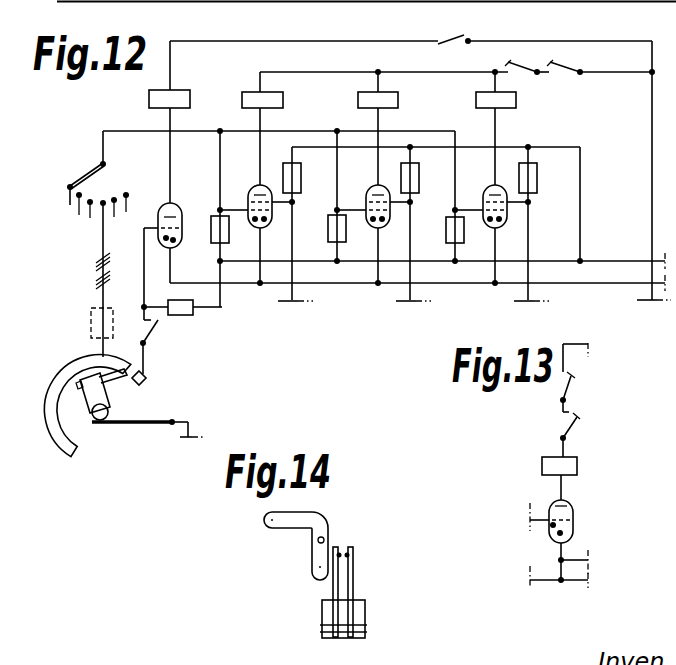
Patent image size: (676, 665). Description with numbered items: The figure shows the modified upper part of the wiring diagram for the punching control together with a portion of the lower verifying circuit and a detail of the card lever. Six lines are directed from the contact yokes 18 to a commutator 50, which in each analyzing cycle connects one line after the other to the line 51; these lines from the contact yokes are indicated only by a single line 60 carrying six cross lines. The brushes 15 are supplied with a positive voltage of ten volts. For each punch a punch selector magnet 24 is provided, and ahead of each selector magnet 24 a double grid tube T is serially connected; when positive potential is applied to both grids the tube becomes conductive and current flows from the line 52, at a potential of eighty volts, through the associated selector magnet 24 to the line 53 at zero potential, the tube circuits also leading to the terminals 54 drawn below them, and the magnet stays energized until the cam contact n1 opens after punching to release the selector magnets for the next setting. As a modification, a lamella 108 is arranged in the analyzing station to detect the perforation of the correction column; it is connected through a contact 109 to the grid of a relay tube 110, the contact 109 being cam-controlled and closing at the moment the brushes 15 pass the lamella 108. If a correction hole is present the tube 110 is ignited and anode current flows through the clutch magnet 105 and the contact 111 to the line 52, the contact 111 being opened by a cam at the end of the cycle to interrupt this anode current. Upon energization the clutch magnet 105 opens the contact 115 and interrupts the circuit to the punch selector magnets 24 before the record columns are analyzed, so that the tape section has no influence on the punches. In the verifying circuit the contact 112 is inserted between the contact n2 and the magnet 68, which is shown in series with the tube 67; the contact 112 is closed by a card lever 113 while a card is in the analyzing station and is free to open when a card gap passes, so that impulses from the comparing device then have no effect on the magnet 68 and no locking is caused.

In FIG. 12, the contact 111 is at (450, 38).
In FIG. 12, the contact 115 is at (527, 59).
In FIG. 12, the cam contact n1 is at (567, 60).
In FIG. 12, the line 52 is at (630, 74).
In FIG. 12, the clutch magnet 105 is at (190, 99).
In FIG. 12, the punch selector magnets 24 is at (284, 100).
In FIG. 12, the line 51 is at (128, 131).
In FIG. 12, the commutator 50 is at (108, 192).
In FIG. 12, the line 60 is at (100, 233).
In FIG. 12, the relay tube 110 is at (178, 208).
In FIG. 12, the double grid tube T is at (252, 187).
In FIG. 12, the output terminals 54 is at (522, 298).
In FIG. 12, the line 53 is at (642, 286).
In FIG. 12, the contact 109 is at (151, 334).
In FIG. 12, the lamella 108 is at (147, 378).
In FIG. 12, the contact yokes 18 is at (72, 370).
In FIG. 12, the brushes 15 is at (115, 381).
In FIG. 13, the contact n2 is at (572, 383).
In FIG. 13, the contact 112 is at (578, 426).
In FIG. 14, the contact 112 is at (343, 550).
In FIG. 13, the magnet 68 is at (546, 462).
In FIG. 13, the thyratron tube 67 is at (568, 513).
In FIG. 14, the card lever 113 is at (285, 523).